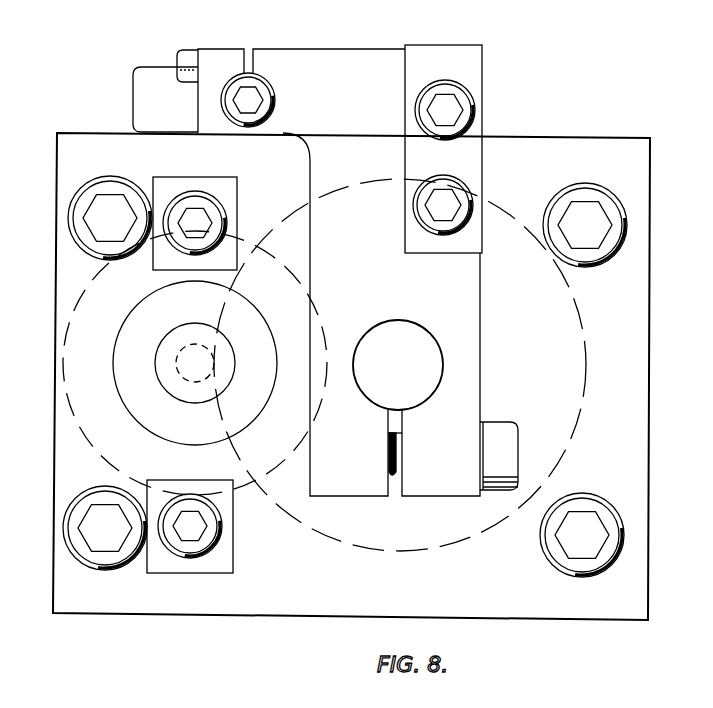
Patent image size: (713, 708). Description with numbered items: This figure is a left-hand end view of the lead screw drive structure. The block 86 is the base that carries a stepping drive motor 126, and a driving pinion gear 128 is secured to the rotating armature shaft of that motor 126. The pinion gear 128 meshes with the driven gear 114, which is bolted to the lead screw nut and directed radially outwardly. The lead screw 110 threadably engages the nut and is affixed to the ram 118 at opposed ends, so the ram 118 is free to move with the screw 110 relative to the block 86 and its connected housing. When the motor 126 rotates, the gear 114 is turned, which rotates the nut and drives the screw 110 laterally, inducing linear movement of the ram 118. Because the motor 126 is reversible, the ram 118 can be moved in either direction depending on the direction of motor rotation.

The block 86 is at (116, 305).
The lead screw 110 is at (443, 367).
The driven gear 114 is at (577, 307).
The ram 118 is at (352, 112).
The stepping drive motor 126 is at (112, 388).
The driving pinion gear 128 is at (183, 376).